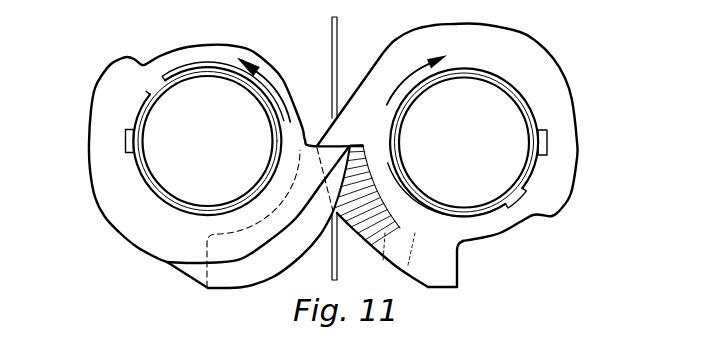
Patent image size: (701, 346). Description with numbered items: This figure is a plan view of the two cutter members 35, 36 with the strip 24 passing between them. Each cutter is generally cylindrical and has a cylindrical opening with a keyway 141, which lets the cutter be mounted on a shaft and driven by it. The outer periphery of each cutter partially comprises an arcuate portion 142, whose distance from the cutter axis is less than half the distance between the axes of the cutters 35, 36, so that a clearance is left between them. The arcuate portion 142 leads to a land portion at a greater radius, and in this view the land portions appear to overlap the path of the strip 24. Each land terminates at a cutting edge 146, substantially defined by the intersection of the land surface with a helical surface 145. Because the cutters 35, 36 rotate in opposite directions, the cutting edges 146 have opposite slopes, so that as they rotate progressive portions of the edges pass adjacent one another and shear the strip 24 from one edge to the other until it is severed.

The strip 24 is at (337, 43).
The cutter 35 is at (611, 117).
The cutter 36 is at (197, 36).
The keyway 141 is at (548, 133).
The arcuate portion 142 is at (108, 187).
The helical surface 145 is at (440, 263).
The cutting edge 146 is at (243, 261).